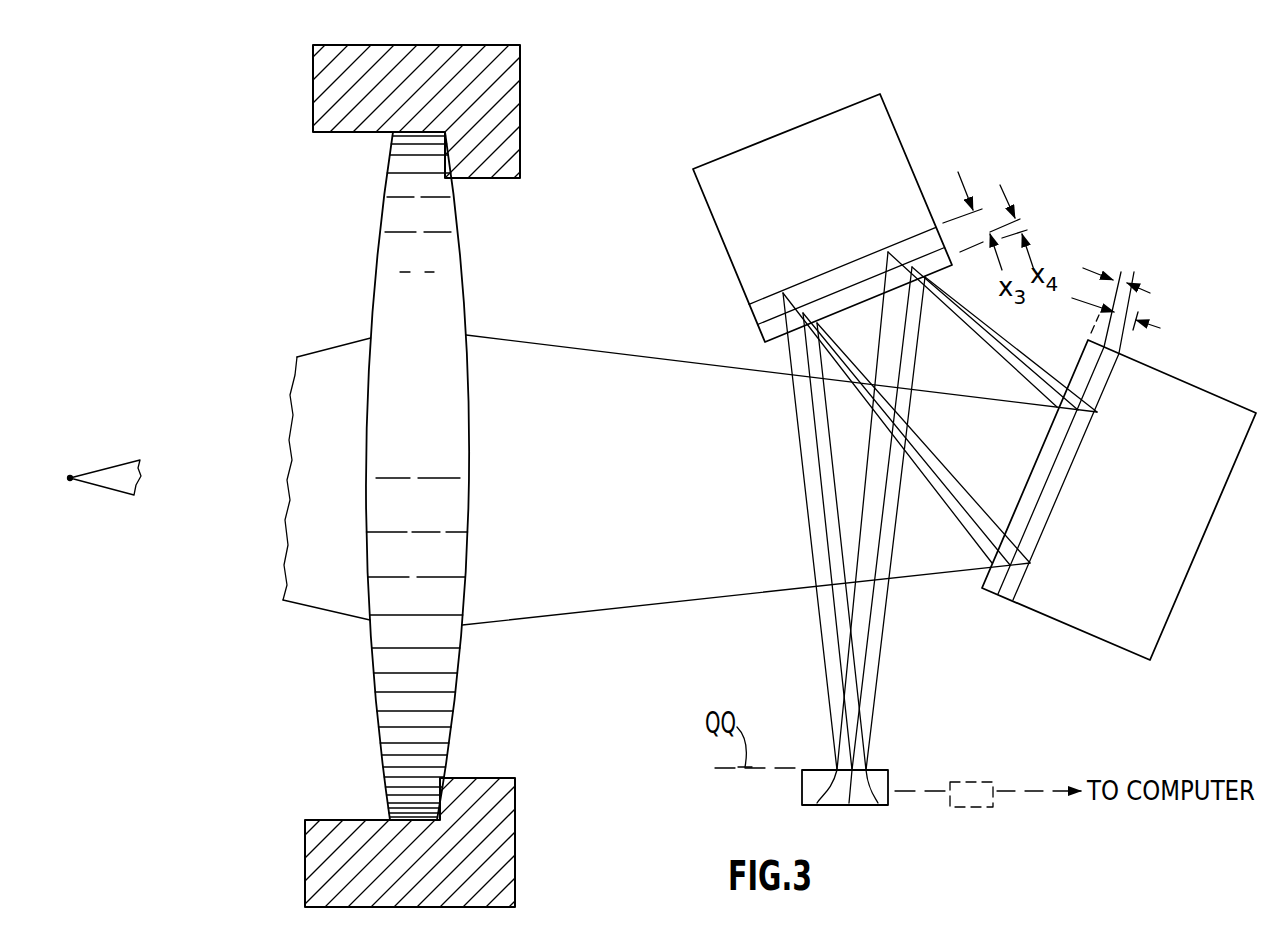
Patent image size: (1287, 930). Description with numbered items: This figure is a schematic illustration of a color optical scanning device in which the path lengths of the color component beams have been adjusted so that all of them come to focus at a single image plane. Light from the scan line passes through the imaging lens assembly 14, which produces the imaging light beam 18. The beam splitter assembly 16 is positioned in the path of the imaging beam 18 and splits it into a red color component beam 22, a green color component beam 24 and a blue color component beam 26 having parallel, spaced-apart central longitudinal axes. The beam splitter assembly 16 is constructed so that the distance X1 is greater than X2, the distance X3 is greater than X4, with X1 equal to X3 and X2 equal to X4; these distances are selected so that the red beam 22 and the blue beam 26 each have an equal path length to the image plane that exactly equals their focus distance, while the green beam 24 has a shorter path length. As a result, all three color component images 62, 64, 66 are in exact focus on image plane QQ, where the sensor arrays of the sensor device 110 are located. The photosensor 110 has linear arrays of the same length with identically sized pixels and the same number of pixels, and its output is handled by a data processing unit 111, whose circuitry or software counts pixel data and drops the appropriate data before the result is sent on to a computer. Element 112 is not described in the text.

The imaging lens assembly 14 is at (470, 282).
The beam splitter assembly 16 is at (1078, 242).
The imaging light beam 18 is at (612, 356).
The red color component beam 22 is at (865, 693).
The green color component beam 24 is at (852, 722).
The blue color component beam 26 is at (832, 707).
The color component image 62 is at (878, 803).
The color component image 64 is at (849, 803).
The color component image 66 is at (817, 803).
The sensor device 110 is at (800, 791).
The data processing unit 111 is at (983, 782).
The light source 112 is at (70, 478).